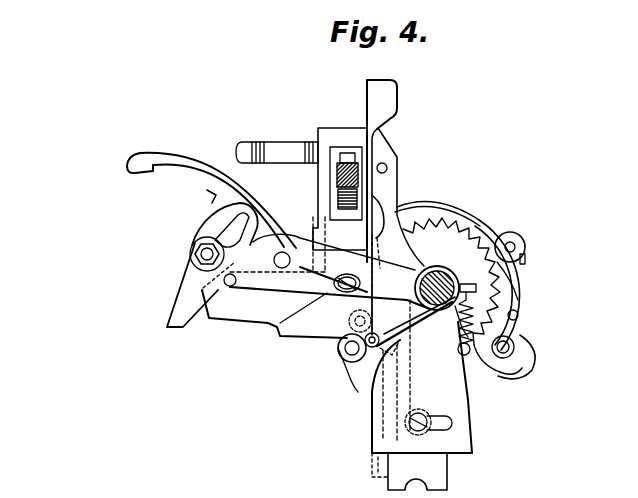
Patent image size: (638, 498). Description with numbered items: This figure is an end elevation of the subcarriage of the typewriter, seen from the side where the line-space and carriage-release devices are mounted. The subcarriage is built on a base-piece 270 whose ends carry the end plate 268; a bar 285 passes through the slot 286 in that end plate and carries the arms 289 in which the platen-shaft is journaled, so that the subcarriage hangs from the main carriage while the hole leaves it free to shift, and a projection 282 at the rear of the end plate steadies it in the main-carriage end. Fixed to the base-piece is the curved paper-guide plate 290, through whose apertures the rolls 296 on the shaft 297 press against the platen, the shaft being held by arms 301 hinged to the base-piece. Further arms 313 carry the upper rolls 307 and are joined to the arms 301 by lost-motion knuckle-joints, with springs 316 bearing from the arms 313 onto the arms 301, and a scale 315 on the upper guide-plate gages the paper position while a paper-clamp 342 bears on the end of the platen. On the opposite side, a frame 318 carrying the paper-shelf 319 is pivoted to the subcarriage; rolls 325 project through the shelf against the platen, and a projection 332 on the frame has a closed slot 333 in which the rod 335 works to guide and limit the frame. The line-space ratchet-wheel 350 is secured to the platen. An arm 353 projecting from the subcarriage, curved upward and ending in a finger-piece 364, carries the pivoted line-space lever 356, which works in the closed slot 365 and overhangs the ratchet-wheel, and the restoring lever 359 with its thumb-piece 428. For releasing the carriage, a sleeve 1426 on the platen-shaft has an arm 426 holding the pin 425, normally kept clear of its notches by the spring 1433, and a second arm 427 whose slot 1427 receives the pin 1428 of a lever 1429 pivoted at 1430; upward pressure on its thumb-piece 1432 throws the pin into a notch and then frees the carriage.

The thumb-piece 428 is at (386, 99).
The restoring lever 359 is at (374, 143).
The line-space lever 356 is at (373, 197).
The arm 353 is at (384, 230).
The closed slot 365 is at (399, 148).
The finger-piece 364 is at (262, 150).
The lever 1429 is at (287, 243).
The paper-shelf 319 is at (163, 156).
The frame 318 is at (177, 167).
The closed slot 333 is at (223, 228).
The rod 335 is at (190, 254).
The projection 332 is at (182, 287).
The projection 282 is at (227, 285).
The thumb-piece 1432 is at (233, 290).
The pivot 1430 is at (280, 267).
The pin 1428 is at (352, 295).
The slot 1427 is at (280, 323).
The arm 427 is at (338, 342).
The rolls 325 is at (345, 352).
The pin 425 is at (367, 352).
The arm 426 is at (377, 380).
The end plate 268 is at (397, 437).
The base-piece 270 is at (447, 463).
The bar 285 is at (450, 422).
The slot 286 is at (447, 430).
The arms 301 is at (473, 390).
The arms 289 is at (475, 387).
The paper-guide plate 290 is at (498, 378).
The shaft 297 is at (525, 363).
The rolls 296 is at (528, 342).
The springs 316 is at (522, 330).
The spring 1433 is at (487, 302).
The arms 313 is at (518, 282).
The sleeve 1426 is at (528, 257).
The rolls 307 is at (525, 240).
The scale 315 is at (487, 225).
The paper-clamp 342 is at (437, 212).
The line-space ratchet-wheel 350 is at (448, 280).